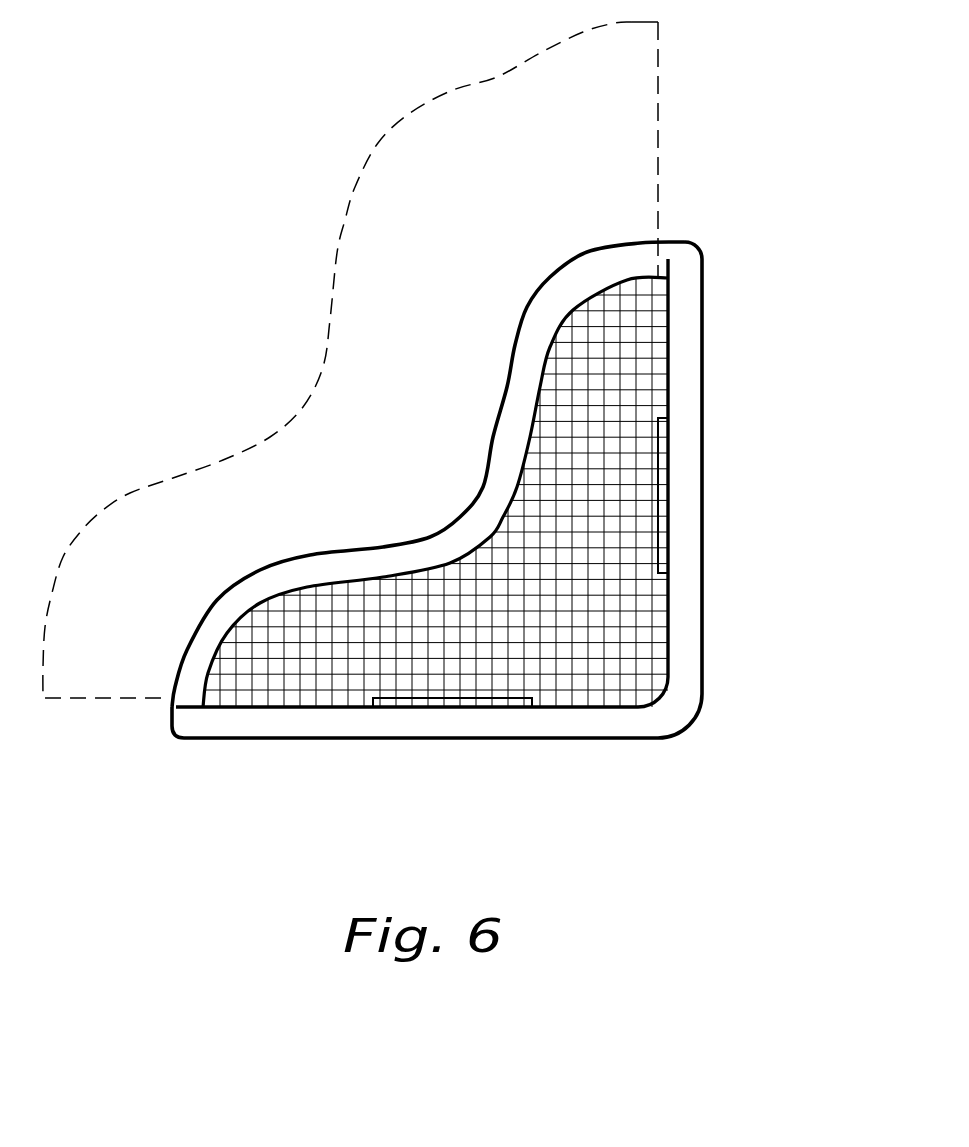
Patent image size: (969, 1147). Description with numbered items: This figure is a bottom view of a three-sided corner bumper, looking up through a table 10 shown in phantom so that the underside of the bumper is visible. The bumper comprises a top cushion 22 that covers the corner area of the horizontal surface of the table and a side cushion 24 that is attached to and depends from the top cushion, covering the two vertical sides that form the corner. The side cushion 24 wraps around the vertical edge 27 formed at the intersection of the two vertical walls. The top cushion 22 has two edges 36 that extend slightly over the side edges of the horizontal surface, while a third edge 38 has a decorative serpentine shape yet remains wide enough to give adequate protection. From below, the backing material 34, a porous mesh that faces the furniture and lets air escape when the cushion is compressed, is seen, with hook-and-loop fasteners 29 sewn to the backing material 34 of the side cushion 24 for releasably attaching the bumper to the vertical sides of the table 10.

The table 10 is at (658, 97).
The top cushion 22 is at (587, 266).
The side cushion 24 is at (702, 522).
The vertical edge 27 is at (660, 697).
The hook-and-loop fasteners 29 is at (667, 465).
The backing material 34 is at (307, 608).
The edges 36 is at (685, 588).
The third edge 38 is at (477, 515).